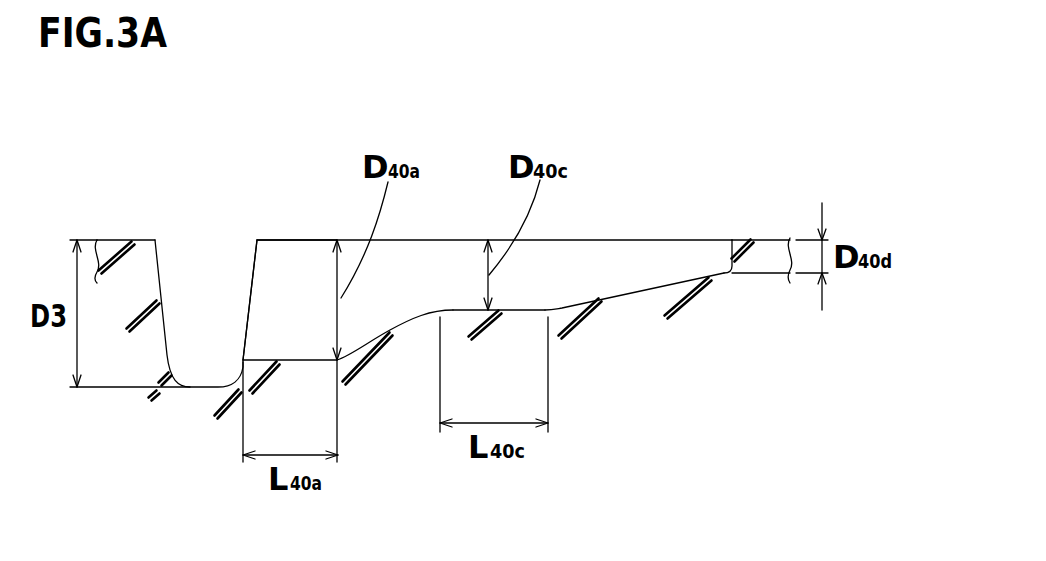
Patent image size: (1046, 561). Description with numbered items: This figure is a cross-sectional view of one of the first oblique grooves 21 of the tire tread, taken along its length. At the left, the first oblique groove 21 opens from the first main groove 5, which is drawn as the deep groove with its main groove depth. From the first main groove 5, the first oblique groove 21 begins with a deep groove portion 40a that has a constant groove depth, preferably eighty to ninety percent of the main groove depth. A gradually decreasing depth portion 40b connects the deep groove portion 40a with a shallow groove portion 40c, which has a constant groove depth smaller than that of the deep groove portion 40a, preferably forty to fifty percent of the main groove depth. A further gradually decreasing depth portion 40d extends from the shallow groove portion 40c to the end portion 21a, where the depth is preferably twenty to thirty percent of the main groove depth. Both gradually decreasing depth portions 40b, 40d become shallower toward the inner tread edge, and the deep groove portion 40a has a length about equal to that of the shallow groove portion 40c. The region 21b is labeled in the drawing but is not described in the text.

The first main groove 5 is at (208, 285).
The first oblique groove 21 is at (463, 267).
The end portion 21a is at (717, 262).
The land portion between groove and step 21b is at (300, 300).
The deep groove portion 40a is at (291, 360).
The gradually decreasing depth portion 40b is at (388, 325).
The shallow groove portion 40c is at (515, 309).
The gradually decreasing depth portion 40d is at (632, 290).